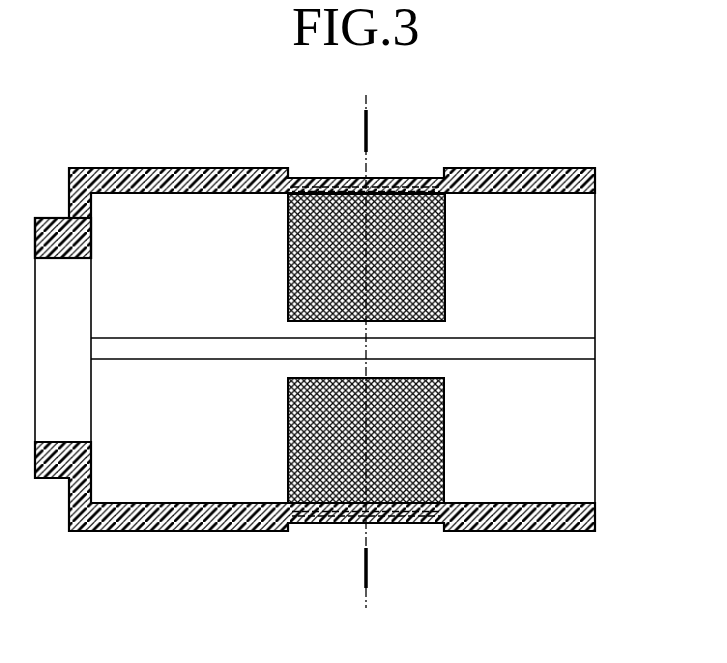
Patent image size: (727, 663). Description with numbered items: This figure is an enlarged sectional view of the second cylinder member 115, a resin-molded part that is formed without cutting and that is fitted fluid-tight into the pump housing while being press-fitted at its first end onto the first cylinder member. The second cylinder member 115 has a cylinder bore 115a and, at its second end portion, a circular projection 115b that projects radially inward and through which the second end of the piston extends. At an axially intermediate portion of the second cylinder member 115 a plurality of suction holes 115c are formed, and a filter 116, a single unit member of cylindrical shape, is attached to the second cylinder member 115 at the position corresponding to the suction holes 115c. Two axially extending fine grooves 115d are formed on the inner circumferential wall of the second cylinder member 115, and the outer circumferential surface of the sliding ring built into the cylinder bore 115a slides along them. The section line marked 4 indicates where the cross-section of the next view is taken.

The second cylinder member 115 is at (510, 168).
The cylinder bore 115a is at (190, 506).
The circular projection 115b is at (83, 236).
The suction holes 115c is at (445, 293).
The fine grooves 115d is at (167, 350).
The filter 116 is at (317, 517).
The section line of FIG. 4 is at (372, 130).